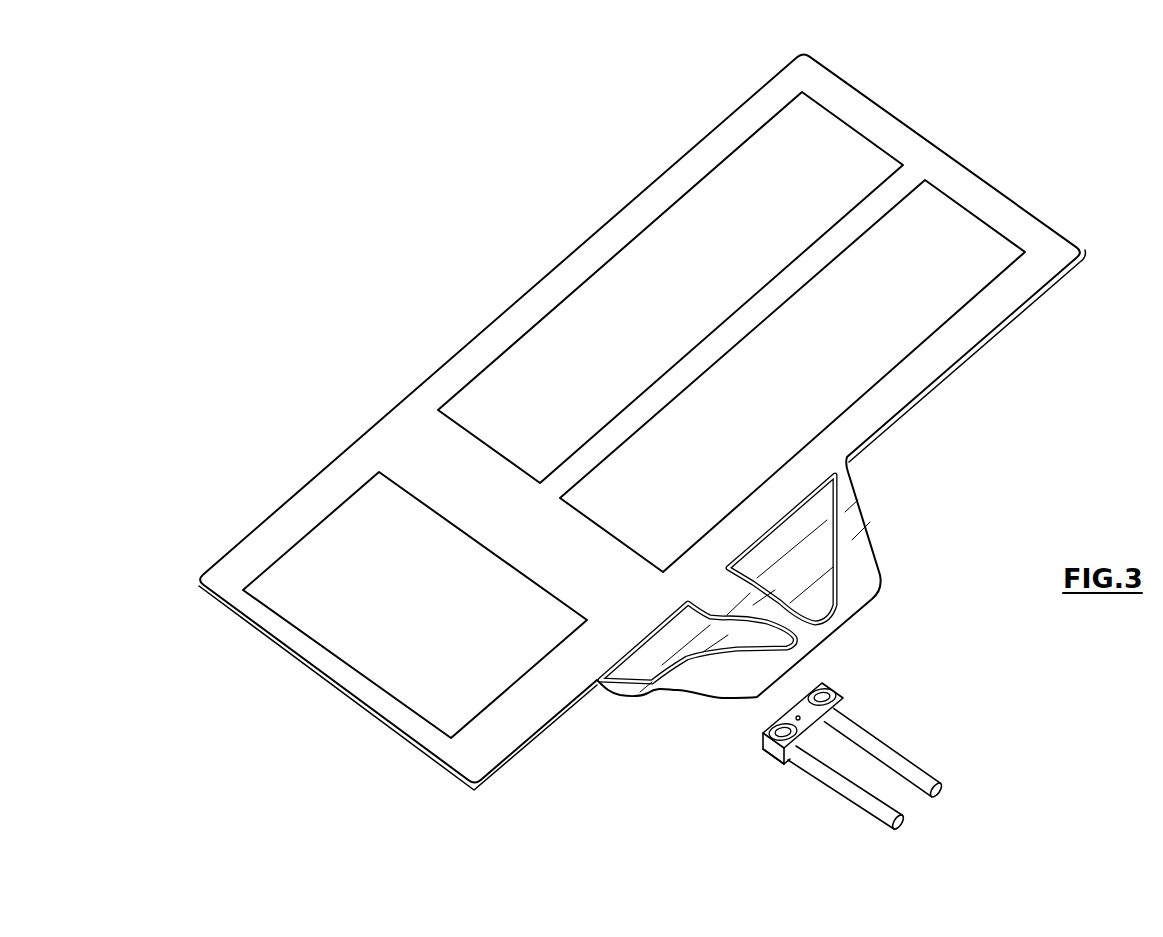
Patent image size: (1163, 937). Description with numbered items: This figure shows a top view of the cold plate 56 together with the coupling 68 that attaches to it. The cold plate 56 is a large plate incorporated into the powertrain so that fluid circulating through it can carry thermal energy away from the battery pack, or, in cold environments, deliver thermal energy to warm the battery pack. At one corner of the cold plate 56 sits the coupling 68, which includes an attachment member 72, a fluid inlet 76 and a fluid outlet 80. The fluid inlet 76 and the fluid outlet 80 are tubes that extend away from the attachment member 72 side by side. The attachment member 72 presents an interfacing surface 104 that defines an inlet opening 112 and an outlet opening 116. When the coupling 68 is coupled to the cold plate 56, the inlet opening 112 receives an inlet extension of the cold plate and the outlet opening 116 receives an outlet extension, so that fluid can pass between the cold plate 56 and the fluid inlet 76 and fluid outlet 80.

The cold plate 56 is at (982, 87).
The coupling 68 is at (835, 736).
The attachment member 72 is at (774, 760).
The fluid inlet 76 is at (922, 777).
The fluid outlet 80 is at (850, 793).
The interfacing surface 104 is at (803, 705).
The inlet opening 112 is at (847, 681).
The outlet opening 116 is at (762, 721).